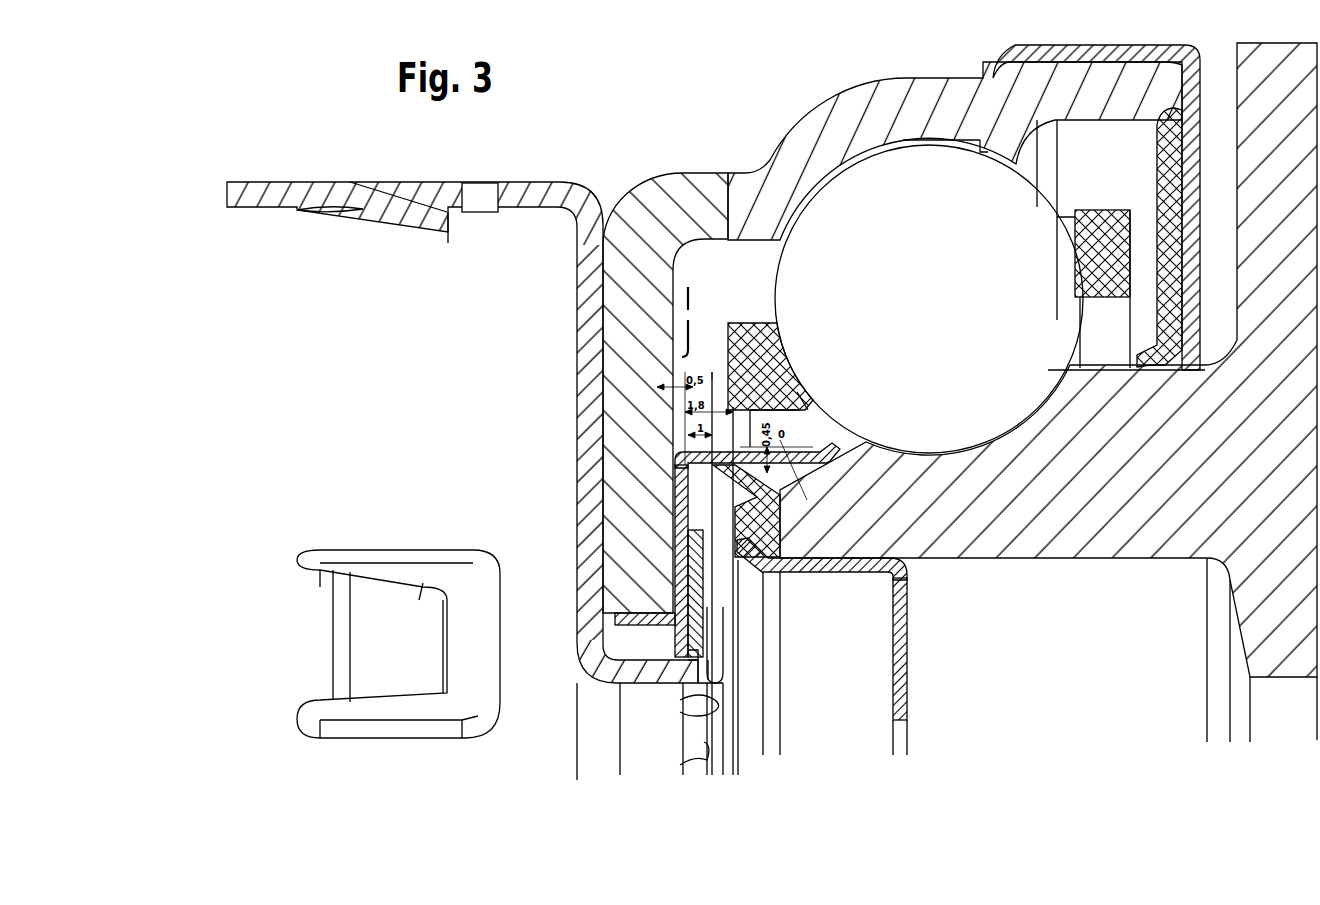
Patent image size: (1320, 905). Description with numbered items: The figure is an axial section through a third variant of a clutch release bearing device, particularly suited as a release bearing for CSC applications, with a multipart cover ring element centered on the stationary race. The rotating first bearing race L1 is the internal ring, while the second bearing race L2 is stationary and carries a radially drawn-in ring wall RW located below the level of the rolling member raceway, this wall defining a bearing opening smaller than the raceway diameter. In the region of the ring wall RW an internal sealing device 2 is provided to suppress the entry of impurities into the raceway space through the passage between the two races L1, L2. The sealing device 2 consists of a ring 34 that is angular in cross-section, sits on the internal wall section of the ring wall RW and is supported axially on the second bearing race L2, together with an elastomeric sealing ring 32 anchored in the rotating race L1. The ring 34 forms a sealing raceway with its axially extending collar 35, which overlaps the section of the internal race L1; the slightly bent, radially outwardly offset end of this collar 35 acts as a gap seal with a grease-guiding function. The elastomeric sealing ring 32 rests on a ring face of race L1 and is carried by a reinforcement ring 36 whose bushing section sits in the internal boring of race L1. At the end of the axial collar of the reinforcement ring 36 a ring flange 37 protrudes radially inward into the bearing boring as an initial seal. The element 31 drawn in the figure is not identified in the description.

The sealing device 2 is at (798, 433).
The first seal carrier ring 31 is at (645, 505).
The elastomeric sealing ring 32 is at (770, 560).
The ring 34 is at (683, 520).
The collar 35 is at (742, 457).
The reinforcement ring 36 is at (772, 555).
The ring flange 37 is at (893, 685).
The first bearing race L1 is at (1088, 520).
The second bearing race L2 is at (826, 130).
The radial drawn-in ring wall RW is at (603, 566).